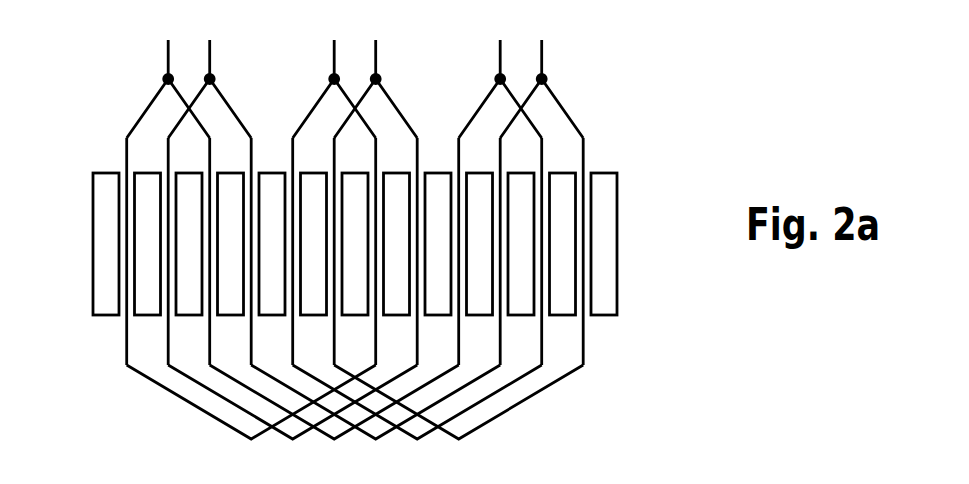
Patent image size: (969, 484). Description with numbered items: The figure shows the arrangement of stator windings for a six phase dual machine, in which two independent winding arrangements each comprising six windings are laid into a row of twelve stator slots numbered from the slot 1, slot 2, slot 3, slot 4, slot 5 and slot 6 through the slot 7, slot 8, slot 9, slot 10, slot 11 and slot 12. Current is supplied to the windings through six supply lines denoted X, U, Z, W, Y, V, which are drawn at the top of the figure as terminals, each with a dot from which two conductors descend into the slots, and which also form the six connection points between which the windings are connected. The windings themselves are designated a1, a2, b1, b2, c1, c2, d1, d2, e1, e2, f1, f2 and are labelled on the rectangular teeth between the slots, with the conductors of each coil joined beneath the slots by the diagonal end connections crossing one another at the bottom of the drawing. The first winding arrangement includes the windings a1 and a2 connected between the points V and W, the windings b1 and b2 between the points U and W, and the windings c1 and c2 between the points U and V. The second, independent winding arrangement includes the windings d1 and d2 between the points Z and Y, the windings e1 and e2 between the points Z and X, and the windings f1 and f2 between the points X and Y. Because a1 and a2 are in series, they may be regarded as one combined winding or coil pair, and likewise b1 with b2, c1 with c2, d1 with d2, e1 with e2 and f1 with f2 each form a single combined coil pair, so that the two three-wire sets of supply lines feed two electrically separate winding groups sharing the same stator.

The slot 1 is at (136, 251).
The slot 2 is at (177, 251).
The slot 3 is at (219, 251).
The slot 4 is at (260, 251).
The slot 5 is at (302, 251).
The slot 6 is at (343, 251).
The slot 7 is at (385, 251).
The slot 8 is at (426, 251).
The slot 9 is at (468, 251).
The slot 10 is at (514, 251).
The slot 11 is at (556, 251).
The slot 12 is at (597, 251).
The supply line X is at (168, 74).
The supply line U is at (209, 74).
The supply line Z is at (334, 74).
The supply line W is at (375, 74).
The supply line Y is at (500, 74).
The supply line V is at (541, 74).
The winding a1 is at (585, 265).
The winding a2 is at (337, 294).
The winding b1 is at (420, 294).
The winding b2 is at (166, 247).
The winding c1 is at (254, 294).
The winding c2 is at (503, 294).
The winding d1 is at (545, 294).
The winding d2 is at (296, 294).
The winding e1 is at (379, 294).
The winding e2 is at (123, 197).
The winding f1 is at (208, 285).
The winding f2 is at (462, 294).